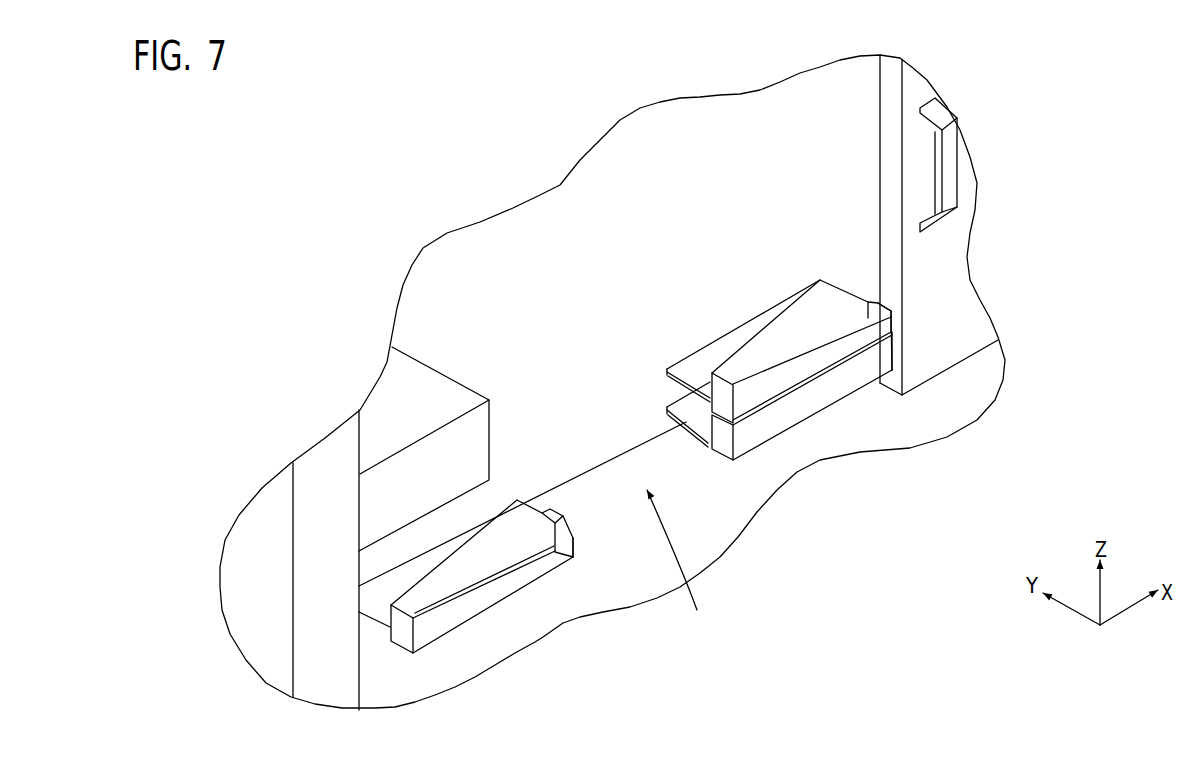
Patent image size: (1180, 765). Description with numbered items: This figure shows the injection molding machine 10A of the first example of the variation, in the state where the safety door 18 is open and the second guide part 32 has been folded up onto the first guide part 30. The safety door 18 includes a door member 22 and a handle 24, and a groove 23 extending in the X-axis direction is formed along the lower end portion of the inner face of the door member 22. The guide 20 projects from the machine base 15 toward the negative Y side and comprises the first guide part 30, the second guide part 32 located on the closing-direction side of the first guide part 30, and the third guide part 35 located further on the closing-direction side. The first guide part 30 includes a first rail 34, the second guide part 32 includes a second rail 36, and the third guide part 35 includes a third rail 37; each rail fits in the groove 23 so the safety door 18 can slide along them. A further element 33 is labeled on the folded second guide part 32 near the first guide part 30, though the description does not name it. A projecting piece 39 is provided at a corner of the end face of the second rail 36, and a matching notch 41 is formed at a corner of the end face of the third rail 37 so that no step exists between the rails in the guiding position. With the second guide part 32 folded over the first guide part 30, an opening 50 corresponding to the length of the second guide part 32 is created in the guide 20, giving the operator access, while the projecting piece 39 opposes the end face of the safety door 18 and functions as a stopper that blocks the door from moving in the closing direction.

The injection molding machine 10A is at (743, 130).
The machine base 15 is at (727, 523).
The safety door 18 is at (982, 225).
The guide 20 is at (707, 277).
The door member 22 is at (947, 245).
The groove 23 is at (886, 346).
The handle 24 is at (1043, 245).
The first guide part 30 is at (735, 388).
The second guide part 32 is at (797, 341).
The contact plate 33 is at (725, 410).
The first rail 34 is at (807, 403).
The third guide part 35 is at (505, 482).
The second rail 36 is at (835, 342).
The third rail 37 is at (510, 582).
The projecting piece 39 is at (882, 306).
The notch 41 is at (558, 530).
The opening 50 is at (676, 564).